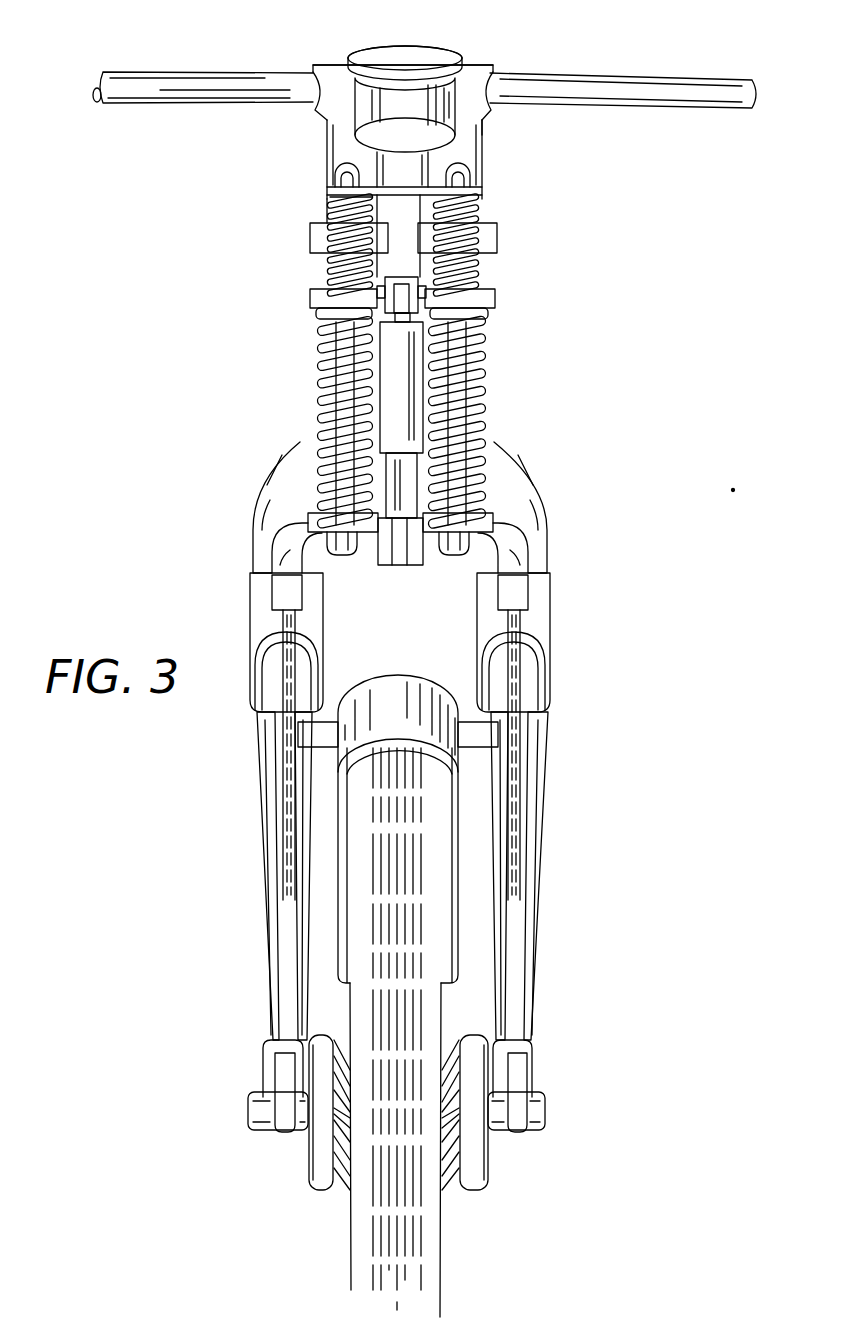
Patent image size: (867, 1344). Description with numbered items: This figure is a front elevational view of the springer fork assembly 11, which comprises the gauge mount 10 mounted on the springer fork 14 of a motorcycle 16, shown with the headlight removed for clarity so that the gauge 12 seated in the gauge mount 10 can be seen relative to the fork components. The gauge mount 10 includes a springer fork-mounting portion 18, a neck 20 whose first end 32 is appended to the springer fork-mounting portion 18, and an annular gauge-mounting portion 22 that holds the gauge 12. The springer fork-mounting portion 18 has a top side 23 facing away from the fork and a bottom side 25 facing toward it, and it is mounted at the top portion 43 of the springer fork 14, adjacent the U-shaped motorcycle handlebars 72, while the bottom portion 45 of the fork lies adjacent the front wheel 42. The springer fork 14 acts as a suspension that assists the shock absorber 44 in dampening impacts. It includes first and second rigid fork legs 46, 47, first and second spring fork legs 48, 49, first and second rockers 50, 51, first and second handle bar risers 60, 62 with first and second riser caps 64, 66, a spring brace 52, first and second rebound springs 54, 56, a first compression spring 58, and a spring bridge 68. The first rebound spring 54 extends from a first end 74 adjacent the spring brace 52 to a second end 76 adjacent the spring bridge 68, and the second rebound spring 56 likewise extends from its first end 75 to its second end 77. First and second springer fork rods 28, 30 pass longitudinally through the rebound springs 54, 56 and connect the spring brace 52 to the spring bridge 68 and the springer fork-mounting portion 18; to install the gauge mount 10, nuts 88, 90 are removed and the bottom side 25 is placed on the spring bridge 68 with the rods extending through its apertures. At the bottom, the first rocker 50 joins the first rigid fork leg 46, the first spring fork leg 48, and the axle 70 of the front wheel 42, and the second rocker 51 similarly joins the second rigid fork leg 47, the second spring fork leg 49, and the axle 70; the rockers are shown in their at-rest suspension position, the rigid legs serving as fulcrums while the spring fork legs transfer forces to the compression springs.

The gauge mount 10 is at (462, 52).
The springer fork assembly 11 is at (570, 481).
The gauge 12 is at (370, 55).
The springer fork 14 is at (527, 295).
The motorcycle 16 is at (205, 853).
The springer fork-mounting portion 18 is at (440, 184).
The neck 20 is at (418, 173).
The annular gauge-mounting portion 22 is at (425, 62).
The top side 23 is at (328, 187).
The bottom side 25 is at (330, 200).
The first springer fork rod 28 is at (330, 265).
The second springer fork rod 30 is at (480, 218).
The first end 32 is at (355, 170).
The front wheel 42 is at (410, 1225).
The top portion 43 is at (528, 188).
The shock absorber 44 is at (403, 437).
The bottom portion 45 is at (250, 1032).
The first rigid fork leg 46 is at (257, 762).
The second rigid fork leg 47 is at (537, 752).
The first spring fork leg 48 is at (292, 948).
The second spring fork leg 49 is at (510, 935).
The first rocker 50 is at (287, 1115).
The second rocker 51 is at (508, 1125).
The spring brace 52 is at (312, 300).
The first rebound spring 54 is at (330, 282).
The second rebound spring 56 is at (480, 245).
The first compression spring 58 is at (322, 415).
The first handle bar riser 60 is at (328, 145).
The second handle bar riser 62 is at (488, 108).
The first riser cap 64 is at (332, 70).
The second riser cap 66 is at (482, 70).
The spring bridge 68 is at (403, 178).
The axle 70 is at (262, 1120).
The motorcycle handlebars 72 is at (690, 95).
The first end 74 is at (320, 290).
The first end 75 is at (493, 283).
The second end 76 is at (350, 200).
The second end 77 is at (447, 203).
The nut 88 is at (330, 181).
The nut 90 is at (398, 236).